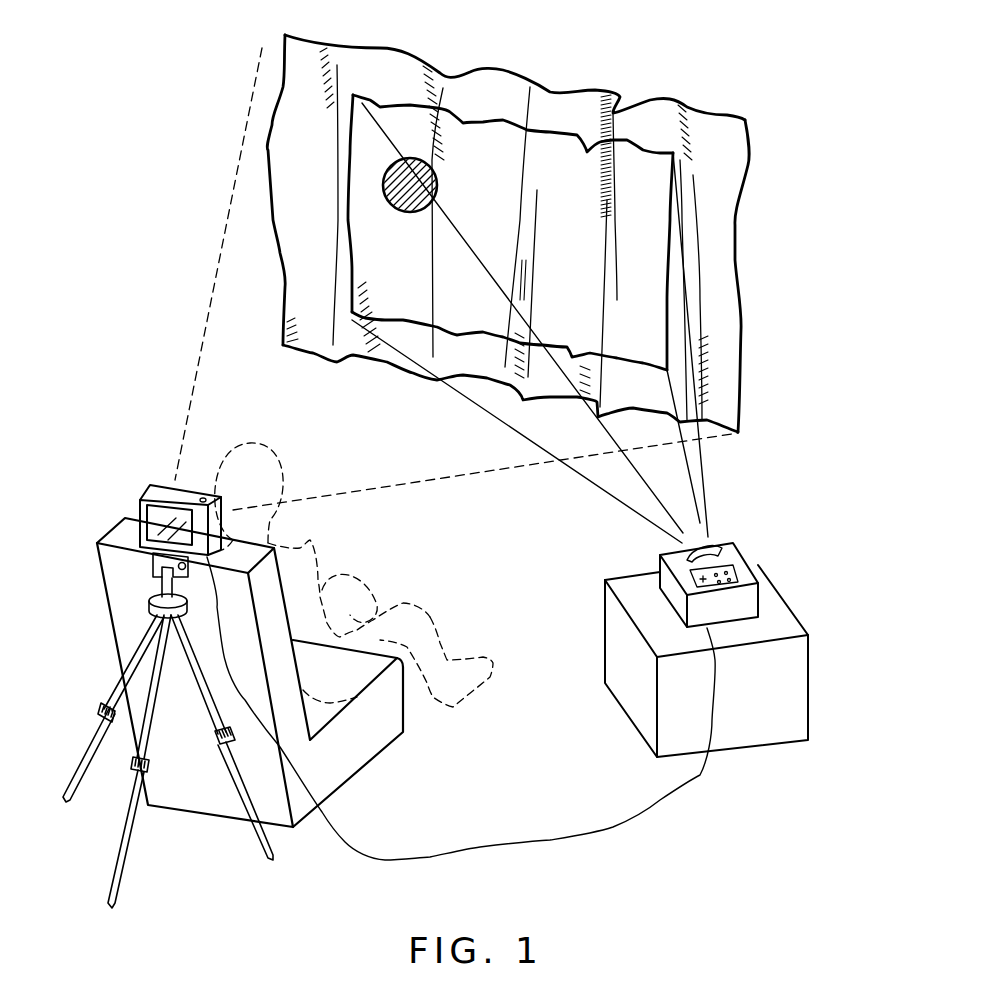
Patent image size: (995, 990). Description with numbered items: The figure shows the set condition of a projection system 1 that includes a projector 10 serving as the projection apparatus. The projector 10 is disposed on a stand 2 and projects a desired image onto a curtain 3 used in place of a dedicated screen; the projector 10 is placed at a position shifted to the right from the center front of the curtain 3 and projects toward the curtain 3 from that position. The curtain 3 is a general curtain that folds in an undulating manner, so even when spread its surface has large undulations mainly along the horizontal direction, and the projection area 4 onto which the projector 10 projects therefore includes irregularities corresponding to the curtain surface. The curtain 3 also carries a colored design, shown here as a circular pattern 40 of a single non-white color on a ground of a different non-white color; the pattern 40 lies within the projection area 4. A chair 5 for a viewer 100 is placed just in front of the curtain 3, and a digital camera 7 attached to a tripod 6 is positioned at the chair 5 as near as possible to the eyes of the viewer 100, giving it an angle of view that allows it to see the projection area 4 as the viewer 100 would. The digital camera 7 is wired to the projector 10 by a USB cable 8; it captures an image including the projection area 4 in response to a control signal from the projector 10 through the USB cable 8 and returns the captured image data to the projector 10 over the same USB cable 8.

The projection system 1 is at (806, 62).
The stand 2 is at (787, 590).
The curtain 3 is at (727, 115).
The projection area 4 is at (645, 152).
The chair 5 is at (360, 747).
The tripod 6 is at (157, 723).
The digital camera 7 is at (145, 487).
The USB cable 8 is at (565, 840).
The projector 10 is at (727, 543).
The pattern 40 is at (422, 158).
The viewer 100 is at (303, 550).